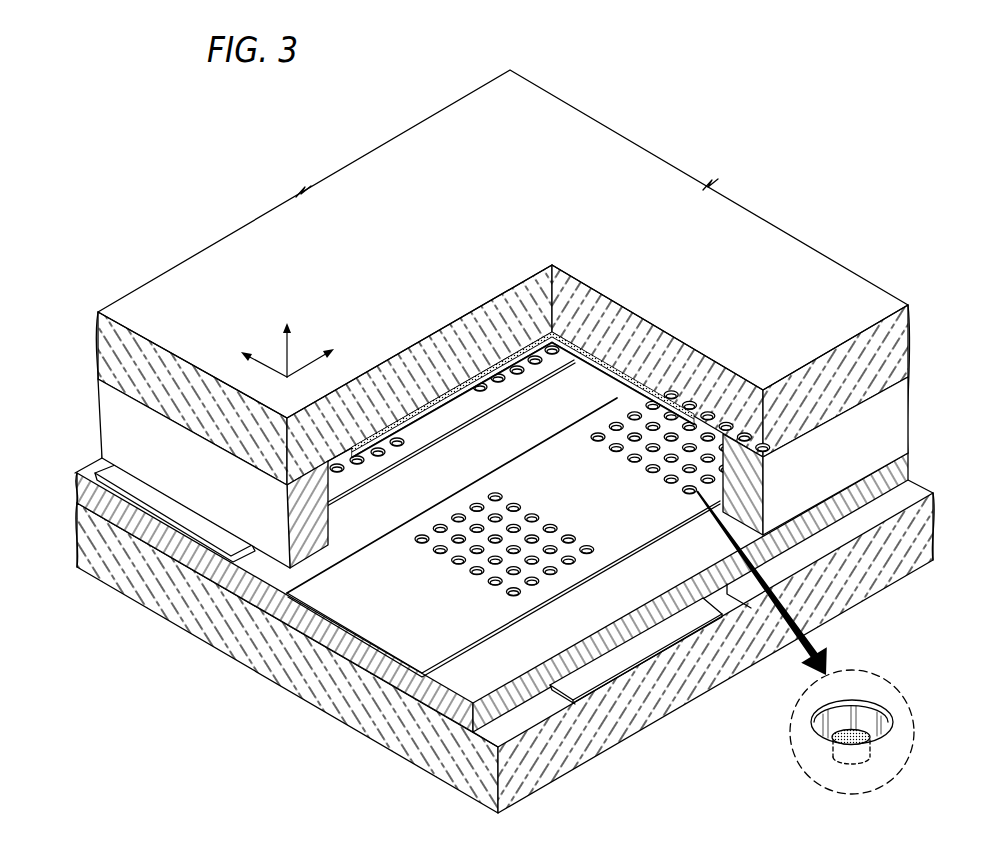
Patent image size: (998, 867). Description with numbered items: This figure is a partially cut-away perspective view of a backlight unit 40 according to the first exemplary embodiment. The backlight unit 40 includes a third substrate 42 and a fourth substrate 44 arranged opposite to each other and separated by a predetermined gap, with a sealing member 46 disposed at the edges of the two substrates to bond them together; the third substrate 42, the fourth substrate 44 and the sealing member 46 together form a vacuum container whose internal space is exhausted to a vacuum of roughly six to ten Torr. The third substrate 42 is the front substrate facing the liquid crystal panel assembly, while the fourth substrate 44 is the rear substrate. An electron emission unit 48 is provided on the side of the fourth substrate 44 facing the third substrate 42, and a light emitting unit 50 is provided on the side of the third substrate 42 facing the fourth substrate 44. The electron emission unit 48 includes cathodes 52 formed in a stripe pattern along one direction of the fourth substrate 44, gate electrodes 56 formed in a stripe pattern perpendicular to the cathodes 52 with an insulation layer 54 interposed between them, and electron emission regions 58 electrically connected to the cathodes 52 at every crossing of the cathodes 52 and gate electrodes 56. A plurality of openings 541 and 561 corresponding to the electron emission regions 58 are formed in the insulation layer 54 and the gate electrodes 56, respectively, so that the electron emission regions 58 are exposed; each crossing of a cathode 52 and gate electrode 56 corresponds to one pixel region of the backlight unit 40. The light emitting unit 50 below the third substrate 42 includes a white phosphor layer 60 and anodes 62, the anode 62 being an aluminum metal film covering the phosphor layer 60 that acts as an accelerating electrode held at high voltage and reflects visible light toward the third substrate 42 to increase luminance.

The backlight unit 40 is at (502, 441).
The third substrate 42 is at (172, 287).
The fourth substrate 44 is at (380, 728).
The sealing member 46 is at (118, 427).
The electron emission unit 48 is at (592, 413).
The light emitting unit 50 is at (523, 342).
The cathode 52 is at (605, 672).
The insulation layer 54 is at (903, 470).
The gate electrode 56 is at (330, 602).
The electron emission region 58 is at (868, 742).
The phosphor layer 60 is at (437, 402).
The anode 62 is at (472, 382).
The opening in insulation layer 541 is at (872, 713).
The opening in gate electrode 561 is at (853, 698).